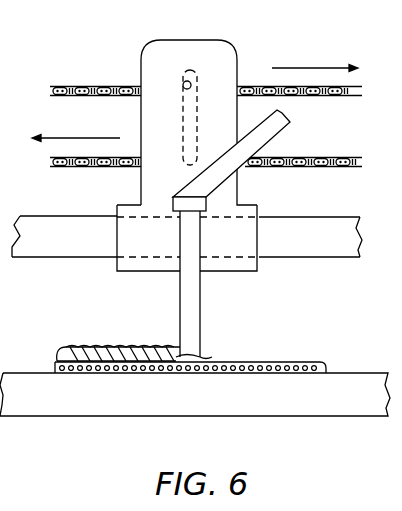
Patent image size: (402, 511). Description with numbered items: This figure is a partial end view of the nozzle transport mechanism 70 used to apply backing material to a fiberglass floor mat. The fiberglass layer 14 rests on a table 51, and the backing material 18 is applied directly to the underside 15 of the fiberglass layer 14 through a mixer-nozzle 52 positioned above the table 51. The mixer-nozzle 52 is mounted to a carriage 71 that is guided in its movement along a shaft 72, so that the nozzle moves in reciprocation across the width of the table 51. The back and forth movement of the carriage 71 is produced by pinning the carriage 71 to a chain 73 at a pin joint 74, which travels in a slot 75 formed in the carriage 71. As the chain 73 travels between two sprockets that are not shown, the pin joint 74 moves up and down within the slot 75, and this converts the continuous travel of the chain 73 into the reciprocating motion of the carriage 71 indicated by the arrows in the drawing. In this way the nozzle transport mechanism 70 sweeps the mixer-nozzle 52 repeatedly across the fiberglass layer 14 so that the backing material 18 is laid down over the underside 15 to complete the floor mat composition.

The fiberglass layer 14 is at (316, 352).
The underside 15 is at (264, 350).
The backing material 18 is at (100, 345).
The table 51 is at (345, 412).
The mixer-nozzle 52 is at (203, 304).
The nozzle transport mechanism 70 is at (278, 48).
The carriage 71 is at (238, 180).
The shaft 72 is at (312, 228).
The chain 73 is at (57, 86).
The pin joint 74 is at (190, 83).
The slot 75 is at (184, 126).